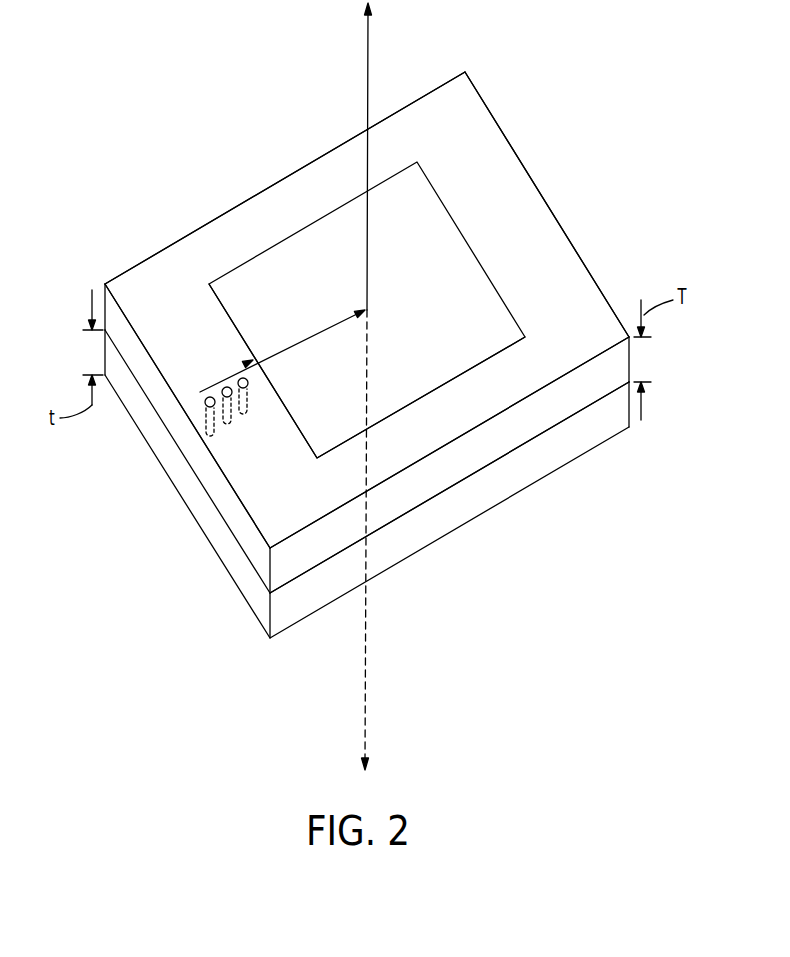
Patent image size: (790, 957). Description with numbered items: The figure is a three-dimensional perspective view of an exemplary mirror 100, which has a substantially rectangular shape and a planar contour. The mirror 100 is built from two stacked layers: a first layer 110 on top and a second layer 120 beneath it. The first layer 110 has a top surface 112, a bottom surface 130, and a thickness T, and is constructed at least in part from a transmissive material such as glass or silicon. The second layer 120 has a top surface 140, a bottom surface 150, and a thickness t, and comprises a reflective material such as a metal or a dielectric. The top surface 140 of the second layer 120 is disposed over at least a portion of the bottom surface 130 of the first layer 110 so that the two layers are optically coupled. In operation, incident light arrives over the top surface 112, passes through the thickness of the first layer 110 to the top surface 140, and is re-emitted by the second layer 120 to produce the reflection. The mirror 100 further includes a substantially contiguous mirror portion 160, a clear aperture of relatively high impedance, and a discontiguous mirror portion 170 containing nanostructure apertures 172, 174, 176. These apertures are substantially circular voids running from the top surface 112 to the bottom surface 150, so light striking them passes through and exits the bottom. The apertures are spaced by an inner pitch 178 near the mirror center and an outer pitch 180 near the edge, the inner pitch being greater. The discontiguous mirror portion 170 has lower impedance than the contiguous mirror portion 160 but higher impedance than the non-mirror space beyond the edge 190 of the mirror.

The mirror 100 is at (123, 120).
The first layer 110 is at (350, 332).
The top surface 112 is at (512, 182).
The second layer 120 is at (363, 484).
The bottom surface 130 is at (385, 542).
The top surface 140 is at (447, 474).
The bottom surface 150 is at (597, 461).
The substantially contiguous mirror portion 160 is at (362, 328).
The discontiguous mirror portion 170 is at (367, 389).
The nanostructure aperture 172 is at (248, 388).
The nanostructure aperture 174 is at (238, 413).
The nanostructure aperture 176 is at (199, 436).
The inner pitch 178 is at (227, 369).
The outer pitch 180 is at (201, 382).
The edge 190 is at (237, 205).